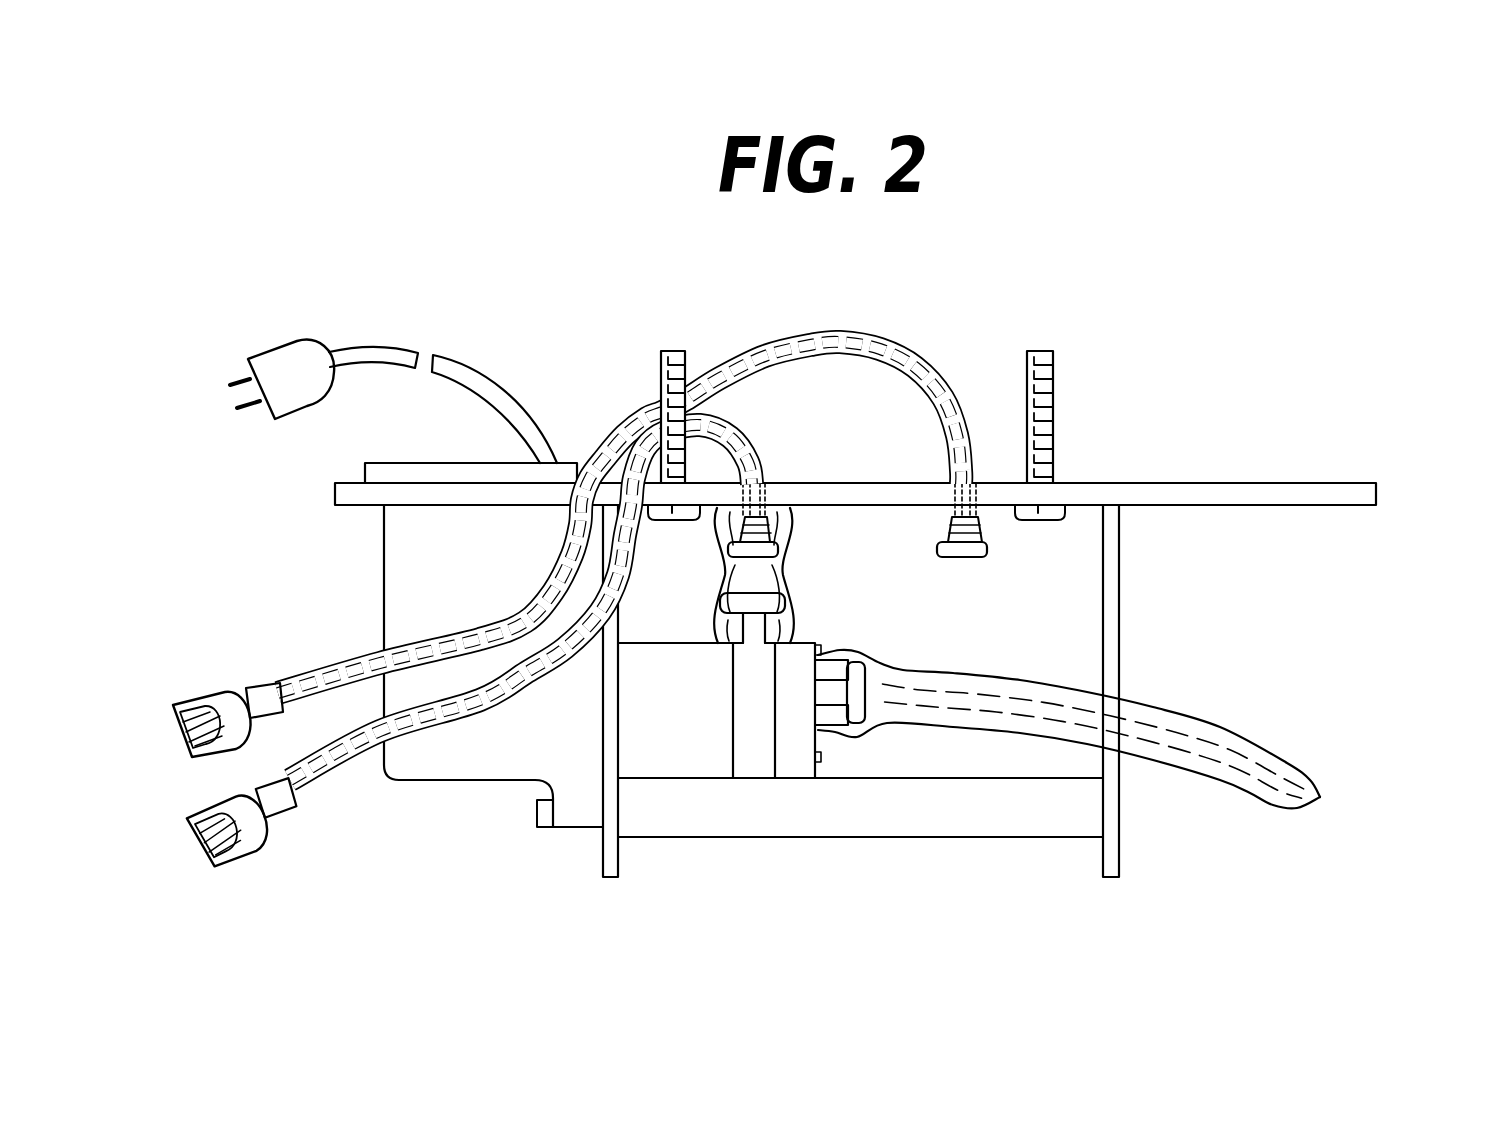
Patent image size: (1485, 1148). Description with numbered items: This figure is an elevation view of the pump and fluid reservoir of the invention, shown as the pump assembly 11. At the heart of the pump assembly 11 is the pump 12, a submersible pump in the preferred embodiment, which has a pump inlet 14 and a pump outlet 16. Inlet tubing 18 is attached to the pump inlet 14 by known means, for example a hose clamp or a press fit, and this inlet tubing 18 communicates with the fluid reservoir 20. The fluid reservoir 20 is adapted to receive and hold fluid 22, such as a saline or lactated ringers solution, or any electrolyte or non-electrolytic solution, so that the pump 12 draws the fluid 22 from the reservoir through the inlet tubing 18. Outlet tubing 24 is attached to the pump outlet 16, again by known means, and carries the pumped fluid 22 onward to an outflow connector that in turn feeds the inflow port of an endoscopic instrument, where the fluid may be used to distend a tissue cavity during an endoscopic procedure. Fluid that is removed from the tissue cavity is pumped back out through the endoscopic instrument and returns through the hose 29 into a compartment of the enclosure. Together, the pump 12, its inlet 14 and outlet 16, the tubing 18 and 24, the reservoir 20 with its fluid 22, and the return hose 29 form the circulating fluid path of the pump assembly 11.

The pump assembly 11 is at (1153, 327).
The pump 12 is at (630, 768).
The pump inlet 14 is at (853, 718).
The pump outlet 16 is at (750, 597).
The inlet tubing 18 is at (1233, 788).
The fluid reservoir 20 is at (1325, 541).
The fluid 22 is at (1407, 768).
The outlet tubing 24 is at (330, 768).
The hose 29 is at (338, 668).